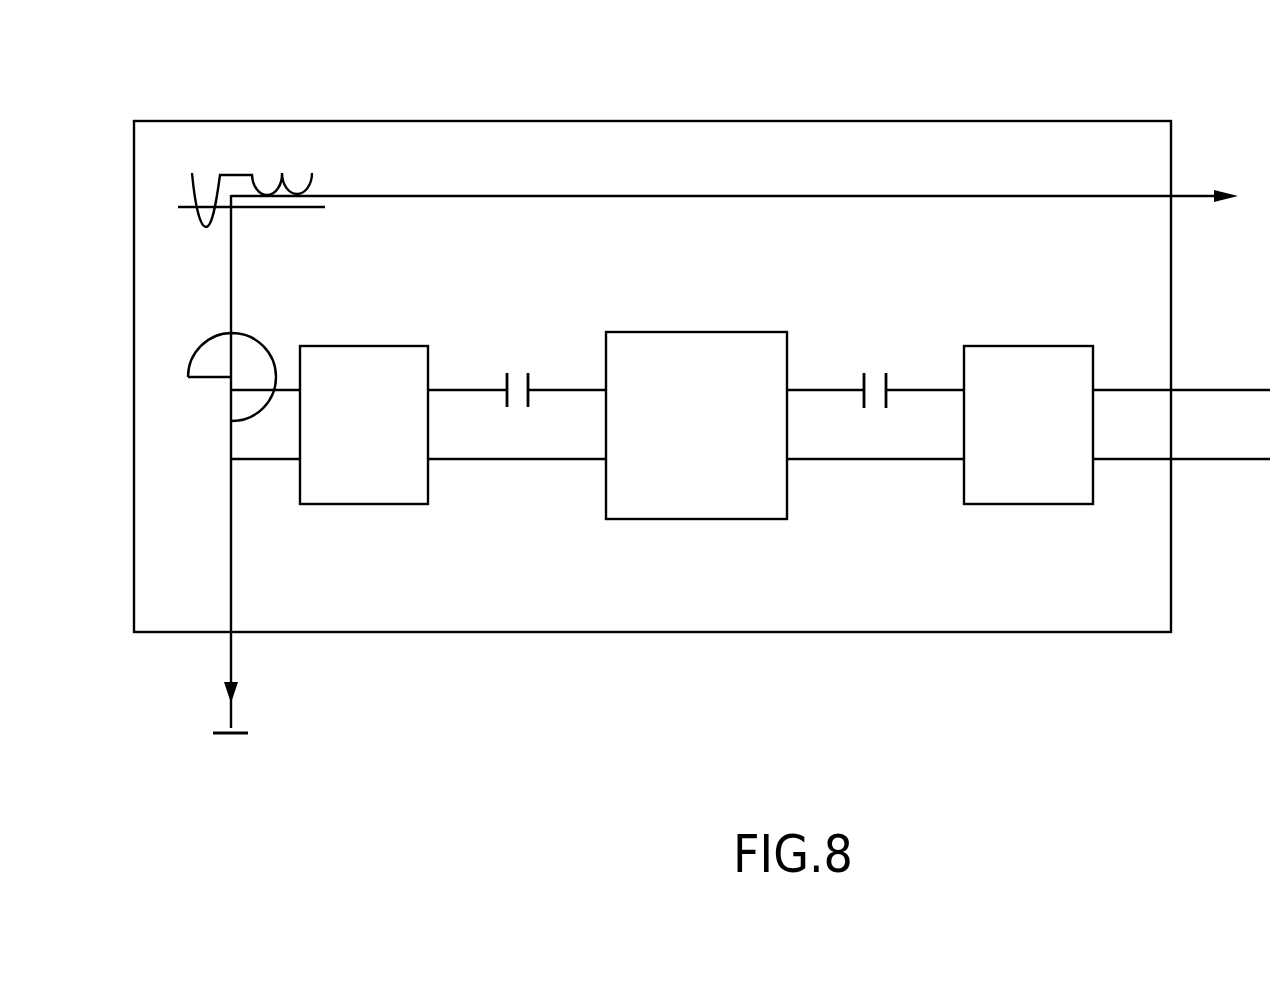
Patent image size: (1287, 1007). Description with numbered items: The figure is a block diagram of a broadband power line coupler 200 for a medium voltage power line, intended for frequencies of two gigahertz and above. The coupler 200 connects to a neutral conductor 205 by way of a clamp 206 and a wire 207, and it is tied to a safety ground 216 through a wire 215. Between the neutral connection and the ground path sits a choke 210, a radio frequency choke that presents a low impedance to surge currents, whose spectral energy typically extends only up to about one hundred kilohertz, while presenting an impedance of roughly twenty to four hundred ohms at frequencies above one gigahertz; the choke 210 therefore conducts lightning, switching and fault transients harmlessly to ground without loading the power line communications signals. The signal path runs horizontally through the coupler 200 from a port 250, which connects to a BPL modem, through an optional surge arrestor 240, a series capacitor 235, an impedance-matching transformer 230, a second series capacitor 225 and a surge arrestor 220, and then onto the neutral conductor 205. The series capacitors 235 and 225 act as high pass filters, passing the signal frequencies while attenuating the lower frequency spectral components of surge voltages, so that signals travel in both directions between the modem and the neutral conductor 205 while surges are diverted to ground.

The broadband power line coupler 200 is at (622, 121).
The neutral conductor 205 is at (1198, 196).
The clamp 206 is at (195, 207).
The wire 207 is at (230, 302).
The choke 210 is at (192, 352).
The wire 215 is at (230, 600).
The safety ground 216 is at (238, 753).
The surge arrestor 220 is at (357, 346).
The series capacitor 225 is at (506, 350).
The impedance-matching transformer 230 is at (680, 332).
The series capacitor 235 is at (867, 350).
The surge arrestor 240 is at (1018, 347).
The port 250 is at (1213, 390).